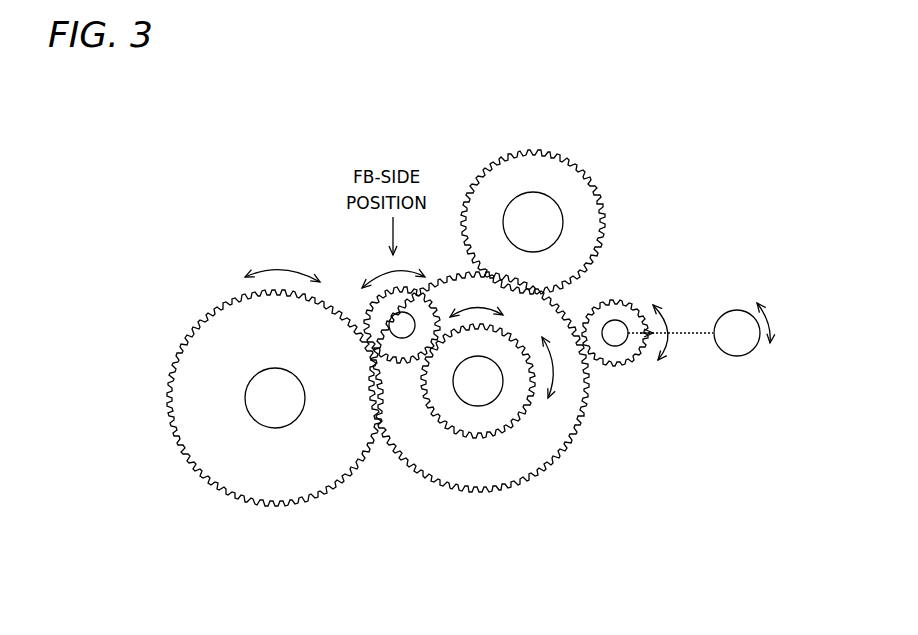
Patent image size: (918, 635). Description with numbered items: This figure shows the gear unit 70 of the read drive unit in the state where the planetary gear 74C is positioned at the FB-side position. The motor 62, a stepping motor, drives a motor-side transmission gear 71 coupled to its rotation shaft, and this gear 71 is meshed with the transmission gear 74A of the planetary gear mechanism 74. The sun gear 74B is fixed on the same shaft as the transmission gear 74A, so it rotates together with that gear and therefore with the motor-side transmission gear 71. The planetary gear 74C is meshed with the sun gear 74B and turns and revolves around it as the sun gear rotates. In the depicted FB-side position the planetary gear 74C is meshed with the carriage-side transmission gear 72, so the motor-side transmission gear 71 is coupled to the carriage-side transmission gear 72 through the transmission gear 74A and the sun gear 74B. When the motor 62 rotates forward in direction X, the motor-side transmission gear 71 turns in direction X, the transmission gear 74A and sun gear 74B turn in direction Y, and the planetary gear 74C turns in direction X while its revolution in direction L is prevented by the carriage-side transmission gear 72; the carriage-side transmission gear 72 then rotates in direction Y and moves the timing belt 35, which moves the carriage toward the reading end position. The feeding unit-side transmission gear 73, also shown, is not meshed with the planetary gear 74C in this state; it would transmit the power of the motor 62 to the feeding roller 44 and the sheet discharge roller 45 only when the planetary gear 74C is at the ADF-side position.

The timing belt 35 is at (275, 398).
The feeding roller 44 is at (614, 222).
The sheet discharge roller 45 is at (533, 222).
The motor 62 is at (743, 310).
The gear unit 70 is at (360, 142).
The motor-side transmission gear 71 is at (625, 302).
The carriage-side transmission gear 72 is at (223, 364).
The feeding unit-side transmission gear 73 is at (593, 185).
The planetary gear mechanism 74 is at (505, 398).
The transmission gear 74A is at (590, 400).
The sun gear 74B is at (537, 403).
The planetary gear 74C is at (358, 297).